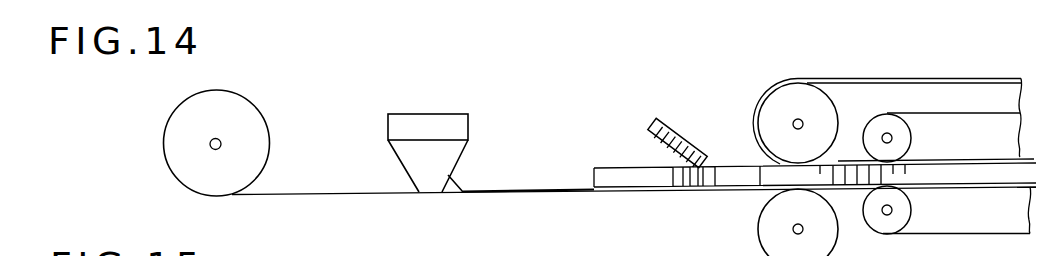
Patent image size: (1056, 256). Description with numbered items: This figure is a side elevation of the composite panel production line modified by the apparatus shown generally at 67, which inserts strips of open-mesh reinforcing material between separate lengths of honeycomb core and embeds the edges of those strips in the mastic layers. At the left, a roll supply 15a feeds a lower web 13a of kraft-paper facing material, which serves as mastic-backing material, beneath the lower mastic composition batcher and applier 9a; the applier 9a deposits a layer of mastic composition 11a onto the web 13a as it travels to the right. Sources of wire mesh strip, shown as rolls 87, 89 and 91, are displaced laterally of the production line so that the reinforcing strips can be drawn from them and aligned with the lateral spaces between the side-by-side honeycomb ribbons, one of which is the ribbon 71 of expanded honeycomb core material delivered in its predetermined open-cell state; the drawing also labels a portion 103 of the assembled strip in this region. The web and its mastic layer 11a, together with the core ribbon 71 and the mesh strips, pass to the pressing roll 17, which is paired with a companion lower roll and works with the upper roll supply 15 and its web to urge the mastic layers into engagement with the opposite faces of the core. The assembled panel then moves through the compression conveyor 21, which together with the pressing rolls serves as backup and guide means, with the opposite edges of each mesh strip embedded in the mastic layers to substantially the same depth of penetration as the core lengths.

The roll supply of facing material 15a is at (263, 118).
The web of facing material 13a is at (367, 195).
The mastic composition batcher and applier 9a is at (388, 148).
The mastic-composition layer 11a is at (493, 189).
The roll of wire mesh strip 91 is at (633, 181).
The roll of wire mesh strip 89 is at (683, 186).
The roll of wire mesh strip 87 is at (698, 186).
The compressed board strip 103 is at (729, 166).
The ribbon of honeycomb core material 71 is at (676, 133).
The reinforcing strip inserting apparatus 67 is at (752, 84).
The pressing roll 17 is at (835, 99).
The compression conveyor 21 is at (940, 234).
The roll supply of facing material 15 is at (864, 254).